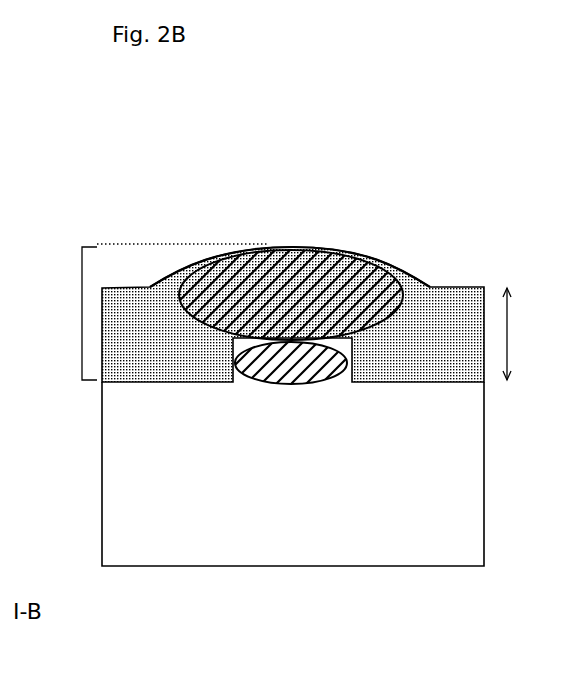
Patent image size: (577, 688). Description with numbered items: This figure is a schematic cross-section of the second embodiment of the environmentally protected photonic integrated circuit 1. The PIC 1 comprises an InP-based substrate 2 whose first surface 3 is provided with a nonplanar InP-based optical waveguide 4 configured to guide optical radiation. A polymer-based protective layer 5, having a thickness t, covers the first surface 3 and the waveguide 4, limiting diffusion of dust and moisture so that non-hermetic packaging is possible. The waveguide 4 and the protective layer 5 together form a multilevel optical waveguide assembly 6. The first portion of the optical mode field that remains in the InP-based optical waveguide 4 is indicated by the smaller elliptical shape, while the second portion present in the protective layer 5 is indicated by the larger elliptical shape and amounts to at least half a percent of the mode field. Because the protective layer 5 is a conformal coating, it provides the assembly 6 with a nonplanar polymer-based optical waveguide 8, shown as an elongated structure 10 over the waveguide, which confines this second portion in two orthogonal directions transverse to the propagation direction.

The environmentally protected photonic integrated circuit (PIC) 1 is at (423, 132).
The InP-based substrate 2 is at (459, 443).
The first surface of the InP-based substrate 3 is at (422, 377).
The InP-based optical waveguide 4 is at (223, 363).
The polymer-based protective layer 5 is at (422, 298).
The multilevel optical waveguide assembly 6 is at (82, 312).
The nonplanar polymer-based optical waveguide 8 is at (372, 222).
The elongated structure 10 is at (203, 257).